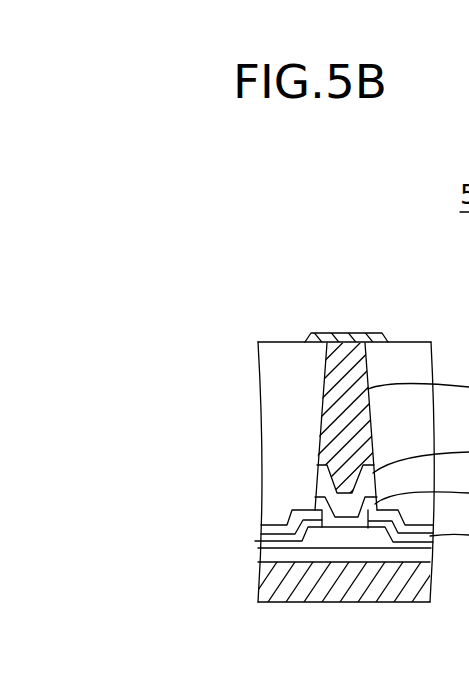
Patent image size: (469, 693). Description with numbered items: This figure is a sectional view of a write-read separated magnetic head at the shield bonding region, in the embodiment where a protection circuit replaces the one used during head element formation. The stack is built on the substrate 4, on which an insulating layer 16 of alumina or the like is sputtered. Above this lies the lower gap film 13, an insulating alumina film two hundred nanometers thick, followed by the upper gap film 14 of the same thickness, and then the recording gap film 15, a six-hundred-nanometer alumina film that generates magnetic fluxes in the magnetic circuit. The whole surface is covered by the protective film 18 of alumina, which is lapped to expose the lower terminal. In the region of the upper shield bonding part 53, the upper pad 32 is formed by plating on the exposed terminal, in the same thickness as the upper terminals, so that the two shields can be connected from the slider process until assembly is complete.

The upper shield bonding part 53 is at (375, 211).
The upper pad 32 is at (354, 333).
The protective film 18 is at (258, 387).
The recording gap film 15 is at (258, 526).
The upper gap film 14 is at (259, 535).
The lower gap film 13 is at (258, 541).
The insulating layer 16 is at (257, 549).
The substrate 4 is at (300, 605).